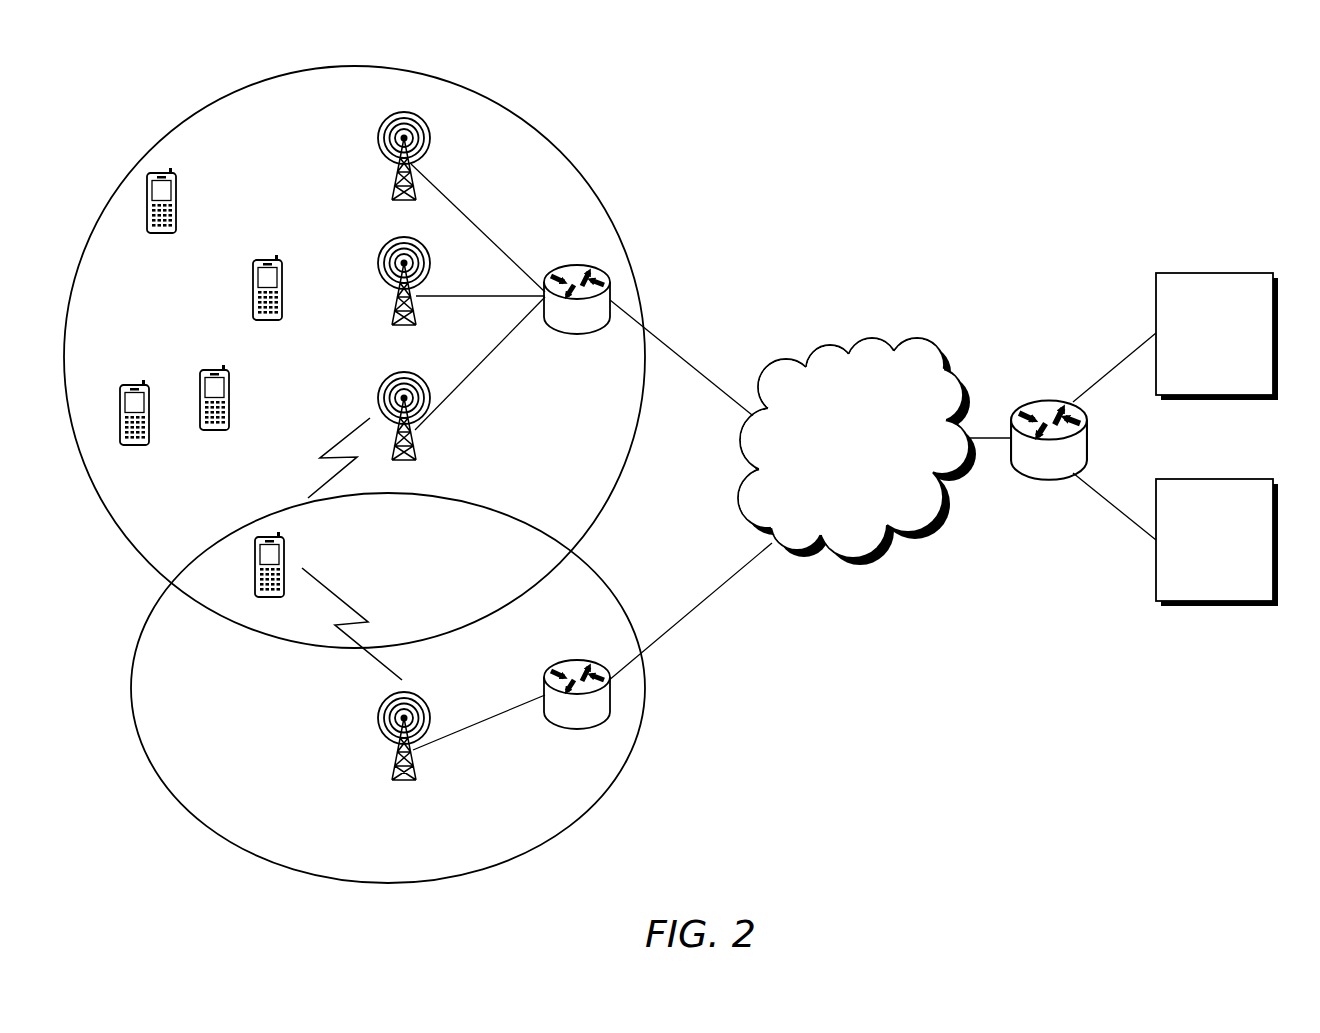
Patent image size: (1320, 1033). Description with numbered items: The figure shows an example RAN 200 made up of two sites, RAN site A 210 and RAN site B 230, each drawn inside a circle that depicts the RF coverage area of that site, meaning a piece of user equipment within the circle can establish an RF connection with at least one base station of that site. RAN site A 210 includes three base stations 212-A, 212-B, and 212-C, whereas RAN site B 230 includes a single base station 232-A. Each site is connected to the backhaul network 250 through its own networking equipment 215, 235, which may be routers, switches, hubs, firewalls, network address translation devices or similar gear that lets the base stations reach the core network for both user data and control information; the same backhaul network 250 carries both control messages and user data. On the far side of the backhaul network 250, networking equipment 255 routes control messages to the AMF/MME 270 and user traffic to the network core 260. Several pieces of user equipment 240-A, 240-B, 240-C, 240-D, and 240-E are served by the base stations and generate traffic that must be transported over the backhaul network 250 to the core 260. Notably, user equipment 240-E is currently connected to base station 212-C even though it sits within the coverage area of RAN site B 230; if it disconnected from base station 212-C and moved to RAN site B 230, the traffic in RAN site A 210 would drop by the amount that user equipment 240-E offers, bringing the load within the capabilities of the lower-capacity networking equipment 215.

The RAN 200 is at (77, 52).
The RAN site A 210 is at (547, 142).
The base station 212-A is at (431, 136).
The base station 212-B is at (376, 263).
The base station 212-C is at (416, 458).
The networking equipment 215 is at (578, 265).
The RAN site B 230 is at (635, 745).
The base station 232-A is at (416, 775).
The networking equipment 235 is at (577, 660).
The user equipment 240-A is at (163, 235).
The user equipment 240-B is at (272, 258).
The user equipment 240-C is at (231, 394).
The user equipment 240-D is at (136, 449).
The user equipment 240-E is at (287, 560).
The backhaul network 250 is at (913, 336).
The networking equipment 255 is at (1052, 398).
The LTE/5G core 260 is at (1216, 480).
The AMF/MME 270 is at (1216, 273).